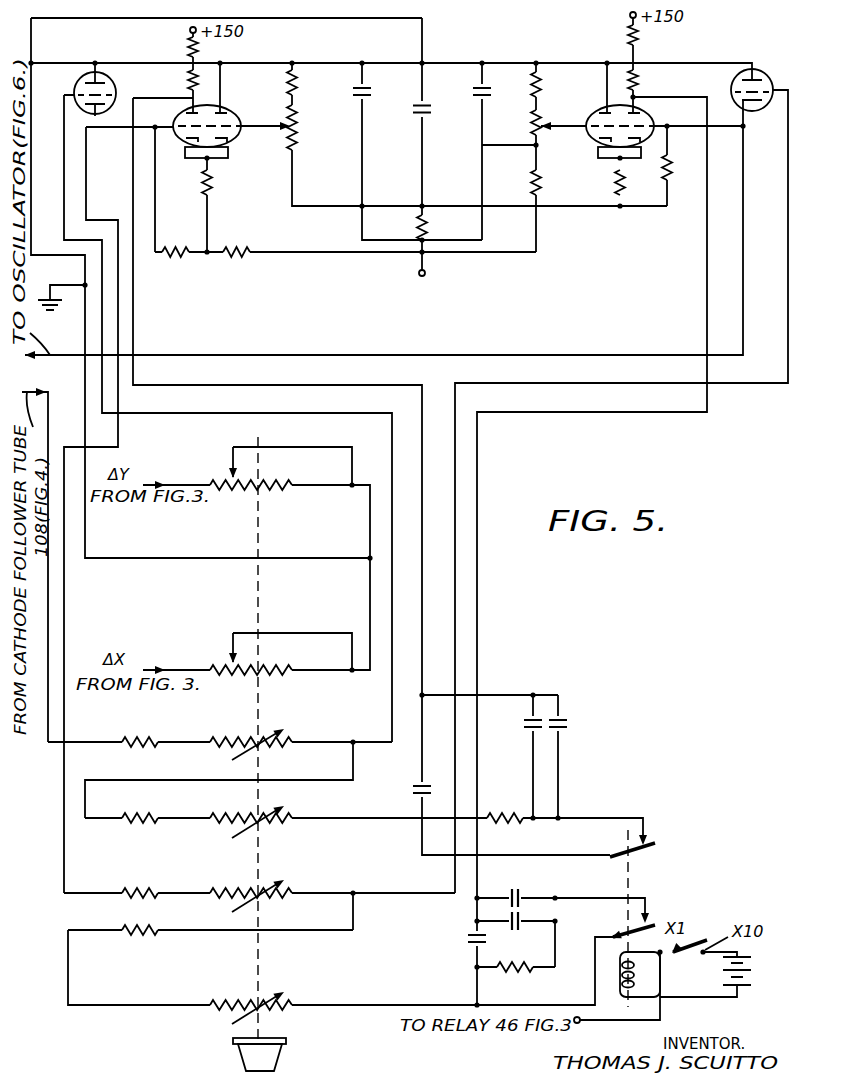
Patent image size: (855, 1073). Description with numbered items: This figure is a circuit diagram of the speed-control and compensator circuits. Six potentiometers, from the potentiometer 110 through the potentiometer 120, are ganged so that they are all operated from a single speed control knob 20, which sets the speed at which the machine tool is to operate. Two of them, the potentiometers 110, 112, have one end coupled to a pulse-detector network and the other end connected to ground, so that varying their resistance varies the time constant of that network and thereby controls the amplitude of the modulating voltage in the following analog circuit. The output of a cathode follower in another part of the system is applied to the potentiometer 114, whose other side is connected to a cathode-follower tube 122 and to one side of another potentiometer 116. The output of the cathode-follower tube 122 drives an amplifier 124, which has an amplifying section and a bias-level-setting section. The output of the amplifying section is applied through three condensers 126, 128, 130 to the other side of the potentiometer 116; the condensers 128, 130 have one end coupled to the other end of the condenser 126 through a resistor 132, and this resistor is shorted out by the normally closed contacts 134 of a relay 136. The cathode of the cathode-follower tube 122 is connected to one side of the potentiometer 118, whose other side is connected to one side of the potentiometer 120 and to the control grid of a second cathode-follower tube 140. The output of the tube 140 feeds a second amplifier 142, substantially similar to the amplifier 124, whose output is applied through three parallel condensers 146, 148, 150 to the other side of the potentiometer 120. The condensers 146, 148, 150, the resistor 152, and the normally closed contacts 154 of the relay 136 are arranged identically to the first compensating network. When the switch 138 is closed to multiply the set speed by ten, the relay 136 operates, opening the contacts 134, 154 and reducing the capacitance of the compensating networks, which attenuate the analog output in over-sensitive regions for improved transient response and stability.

The speed control knob 20 is at (283, 1055).
The potentiometer 110 is at (283, 488).
The potentiometer 112 is at (286, 674).
The potentiometer 114 is at (239, 738).
The potentiometer 116 is at (293, 824).
The potentiometer 118 is at (226, 886).
The potentiometer 120 is at (224, 996).
The cathode-follower tube 122 is at (117, 89).
The amplifier 124 is at (229, 148).
The condenser 126 is at (410, 795).
The condenser 128 is at (525, 732).
The condenser 130 is at (564, 720).
The resistor 132 is at (510, 822).
The normally closed contacts 134 is at (649, 849).
The relay 136 is at (635, 975).
The switch 138 is at (700, 942).
The second cathode-follower tube 140 is at (754, 68).
The second amplifier 142 is at (586, 146).
The condenser 146 is at (473, 938).
The condenser 148 is at (520, 890).
The condenser 150 is at (515, 926).
The resistor 152 is at (519, 975).
The normally closed contacts 154 is at (620, 931).